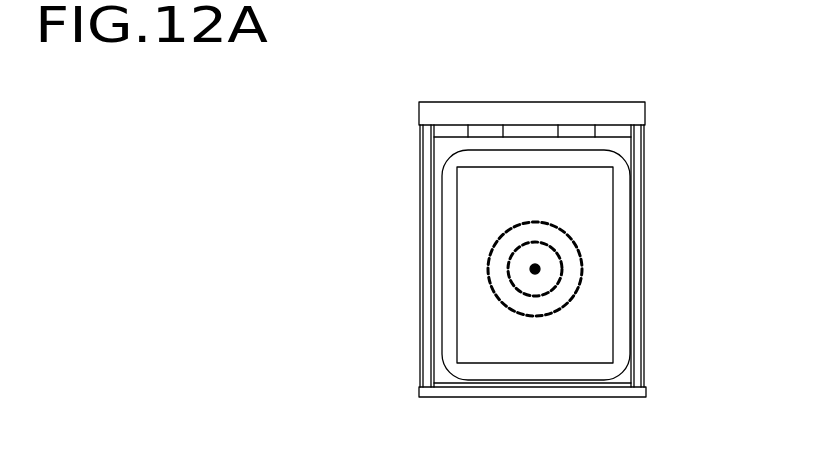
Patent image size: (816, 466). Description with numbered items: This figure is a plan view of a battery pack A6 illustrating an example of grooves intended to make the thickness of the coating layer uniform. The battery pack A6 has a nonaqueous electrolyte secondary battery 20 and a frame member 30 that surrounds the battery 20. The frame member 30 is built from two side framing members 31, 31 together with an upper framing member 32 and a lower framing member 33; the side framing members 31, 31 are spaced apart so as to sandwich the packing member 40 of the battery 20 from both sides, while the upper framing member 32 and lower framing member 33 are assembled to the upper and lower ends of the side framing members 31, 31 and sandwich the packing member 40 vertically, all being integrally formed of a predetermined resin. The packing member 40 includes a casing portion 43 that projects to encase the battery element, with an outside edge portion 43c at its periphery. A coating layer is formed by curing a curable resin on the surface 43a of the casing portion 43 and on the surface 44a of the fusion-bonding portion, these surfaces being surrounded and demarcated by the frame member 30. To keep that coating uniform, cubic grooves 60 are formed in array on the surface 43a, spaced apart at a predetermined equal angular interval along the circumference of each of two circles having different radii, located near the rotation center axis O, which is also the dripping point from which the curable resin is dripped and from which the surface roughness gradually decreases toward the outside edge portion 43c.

The battery pack A6 is at (402, 128).
The nonaqueous electrolyte secondary battery 20 is at (622, 153).
The frame member 30 is at (419, 390).
The side framing member 31 is at (419, 295).
The upper framing member 32 is at (527, 102).
The lower framing member 33 is at (503, 397).
The packing member 40 is at (441, 160).
The casing portion 43 is at (482, 165).
The surface of casing portion 43a is at (587, 342).
The outside edge portion 43c is at (615, 267).
The surface of fusion-bonding portion 44a is at (622, 338).
The cubic groove 60 is at (490, 252).
The rotation center axis O is at (537, 268).